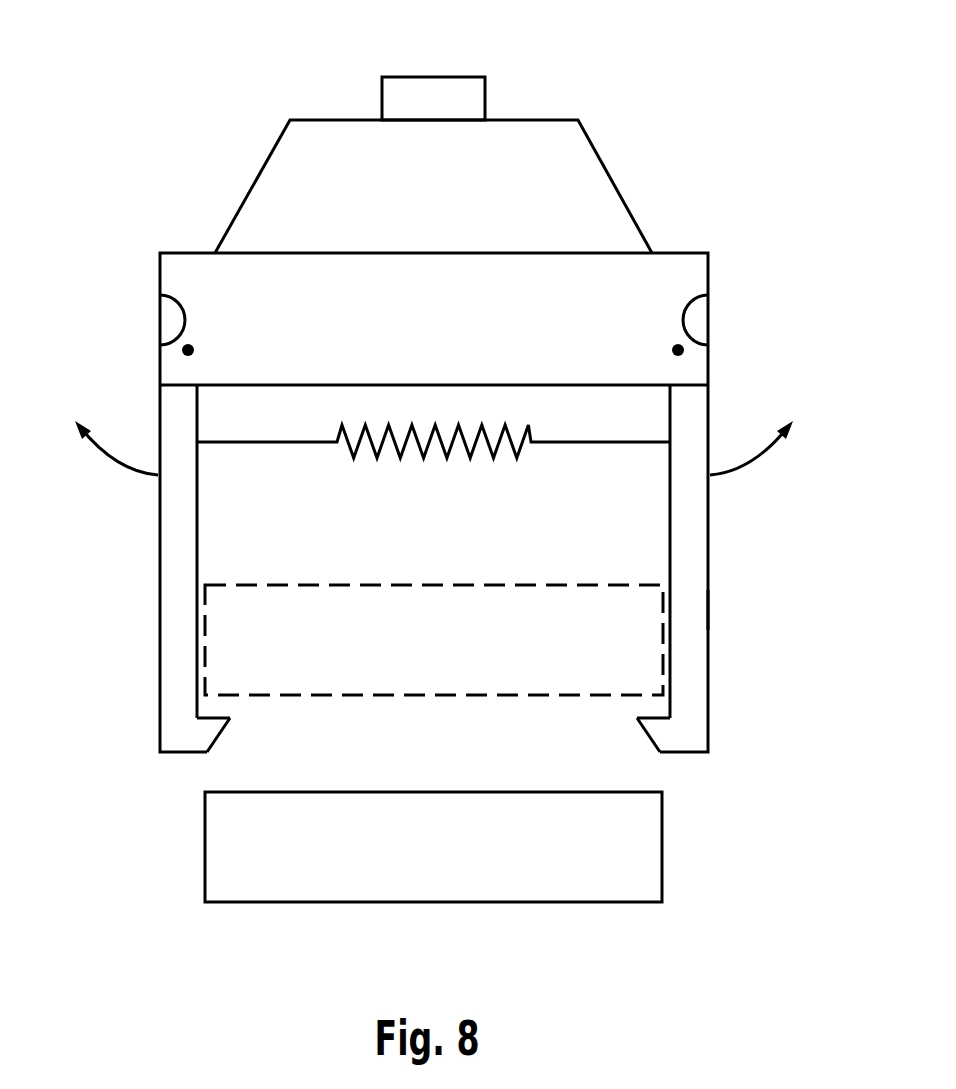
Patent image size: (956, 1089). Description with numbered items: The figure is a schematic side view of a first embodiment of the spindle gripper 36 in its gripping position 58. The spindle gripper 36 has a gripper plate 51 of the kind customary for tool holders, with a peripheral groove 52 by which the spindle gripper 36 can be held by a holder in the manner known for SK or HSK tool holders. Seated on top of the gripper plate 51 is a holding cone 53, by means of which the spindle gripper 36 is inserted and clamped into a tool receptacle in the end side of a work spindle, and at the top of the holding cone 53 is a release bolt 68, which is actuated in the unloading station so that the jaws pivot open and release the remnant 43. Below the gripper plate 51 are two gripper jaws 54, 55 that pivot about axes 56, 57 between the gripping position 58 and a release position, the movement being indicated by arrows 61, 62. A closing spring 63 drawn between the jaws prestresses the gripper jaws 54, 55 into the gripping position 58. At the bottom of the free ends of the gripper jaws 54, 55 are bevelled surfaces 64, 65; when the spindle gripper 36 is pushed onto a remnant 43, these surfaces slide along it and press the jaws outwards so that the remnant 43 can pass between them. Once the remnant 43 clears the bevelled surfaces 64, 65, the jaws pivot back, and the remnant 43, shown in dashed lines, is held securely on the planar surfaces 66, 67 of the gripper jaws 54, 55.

The spindle gripper 36 is at (200, 150).
The remnant 43 is at (419, 657).
The gripper plate 51 is at (628, 303).
The peripheral groove 52 is at (695, 322).
The holding cone 53 is at (597, 190).
The gripper jaw 54 is at (172, 527).
The gripper jaw 55 is at (697, 527).
The axis 56 is at (172, 367).
The axis 57 is at (697, 368).
The gripping position 58 is at (738, 611).
The arrow 61 is at (108, 458).
The arrow 62 is at (757, 458).
The closing spring 63 is at (443, 458).
The bevelled surface 64 is at (235, 738).
The bevelled surface 65 is at (633, 738).
The planar surface 66 is at (212, 717).
The planar surface 67 is at (652, 717).
The release bolt 68 is at (432, 88).